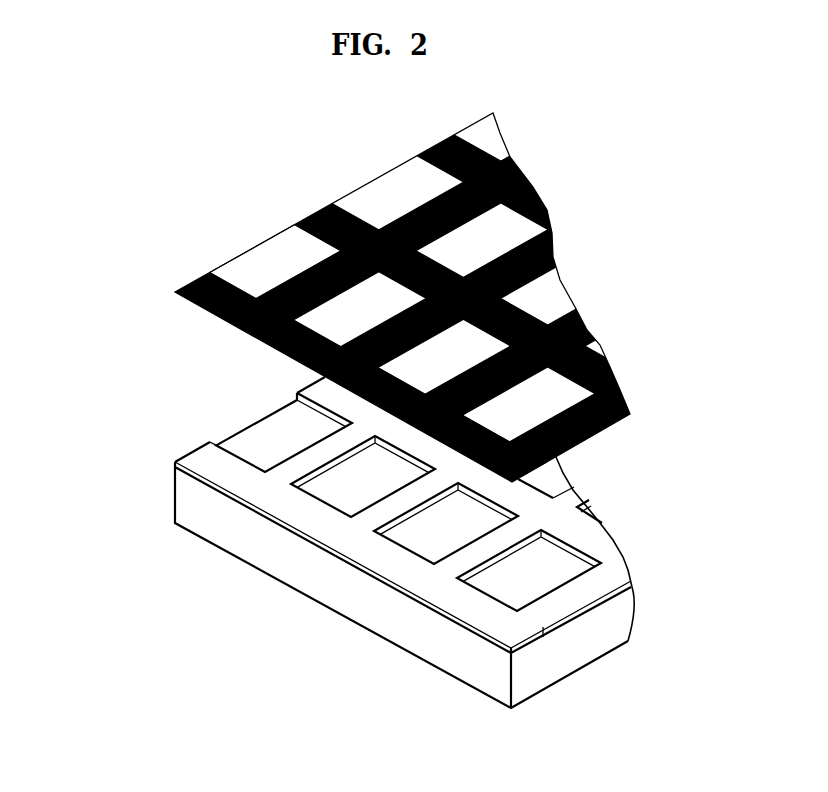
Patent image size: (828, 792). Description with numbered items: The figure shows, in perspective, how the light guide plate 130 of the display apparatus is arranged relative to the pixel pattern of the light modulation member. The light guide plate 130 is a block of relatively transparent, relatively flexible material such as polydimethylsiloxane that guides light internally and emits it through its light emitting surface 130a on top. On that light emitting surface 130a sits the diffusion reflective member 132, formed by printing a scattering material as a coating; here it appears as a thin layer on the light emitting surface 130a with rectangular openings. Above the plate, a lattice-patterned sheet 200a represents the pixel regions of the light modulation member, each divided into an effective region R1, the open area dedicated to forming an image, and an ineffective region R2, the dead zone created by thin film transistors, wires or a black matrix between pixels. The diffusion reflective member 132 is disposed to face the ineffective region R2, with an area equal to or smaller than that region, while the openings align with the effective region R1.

The light guide plate 130 is at (185, 500).
The diffusion reflective member 132 is at (200, 453).
The light emitting surface 130a is at (257, 428).
The mask sheet with lattice pattern 200a is at (188, 305).
The effective region R1 is at (265, 252).
The ineffective region R2 is at (202, 278).